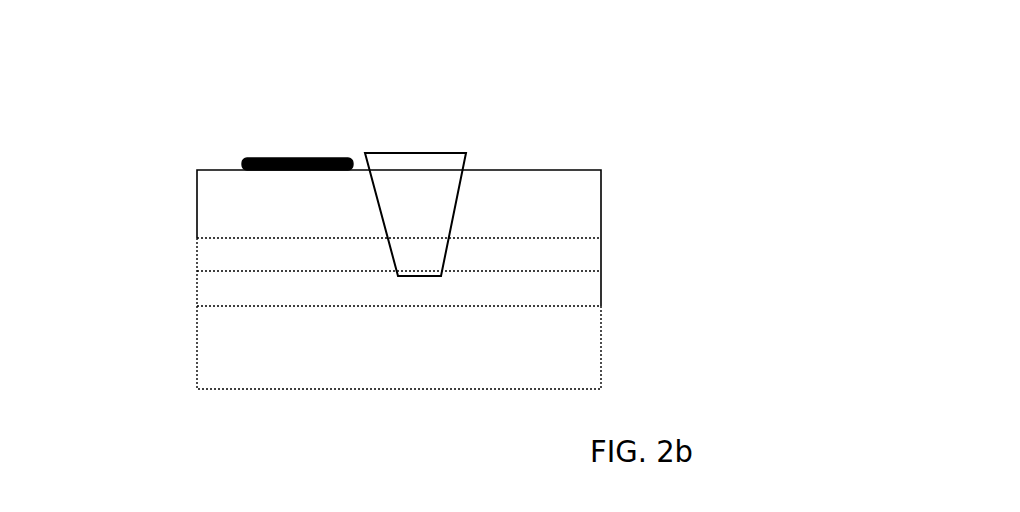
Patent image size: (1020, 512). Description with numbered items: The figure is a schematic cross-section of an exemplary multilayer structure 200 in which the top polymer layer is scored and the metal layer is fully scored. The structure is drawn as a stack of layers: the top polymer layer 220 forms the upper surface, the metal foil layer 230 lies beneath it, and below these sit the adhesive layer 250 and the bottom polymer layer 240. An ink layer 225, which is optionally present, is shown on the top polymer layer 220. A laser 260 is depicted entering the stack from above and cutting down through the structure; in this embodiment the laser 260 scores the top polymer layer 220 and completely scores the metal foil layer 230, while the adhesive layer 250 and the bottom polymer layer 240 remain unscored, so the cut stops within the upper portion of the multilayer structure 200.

The multilayer structure 200 is at (516, 142).
The top polymer layer 220 is at (148, 213).
The ink layer 225 is at (298, 142).
The metal foil layer 230 is at (148, 255).
The bottom polymer layer 240 is at (148, 340).
The adhesive layer 250 is at (635, 290).
The laser 260 is at (415, 135).